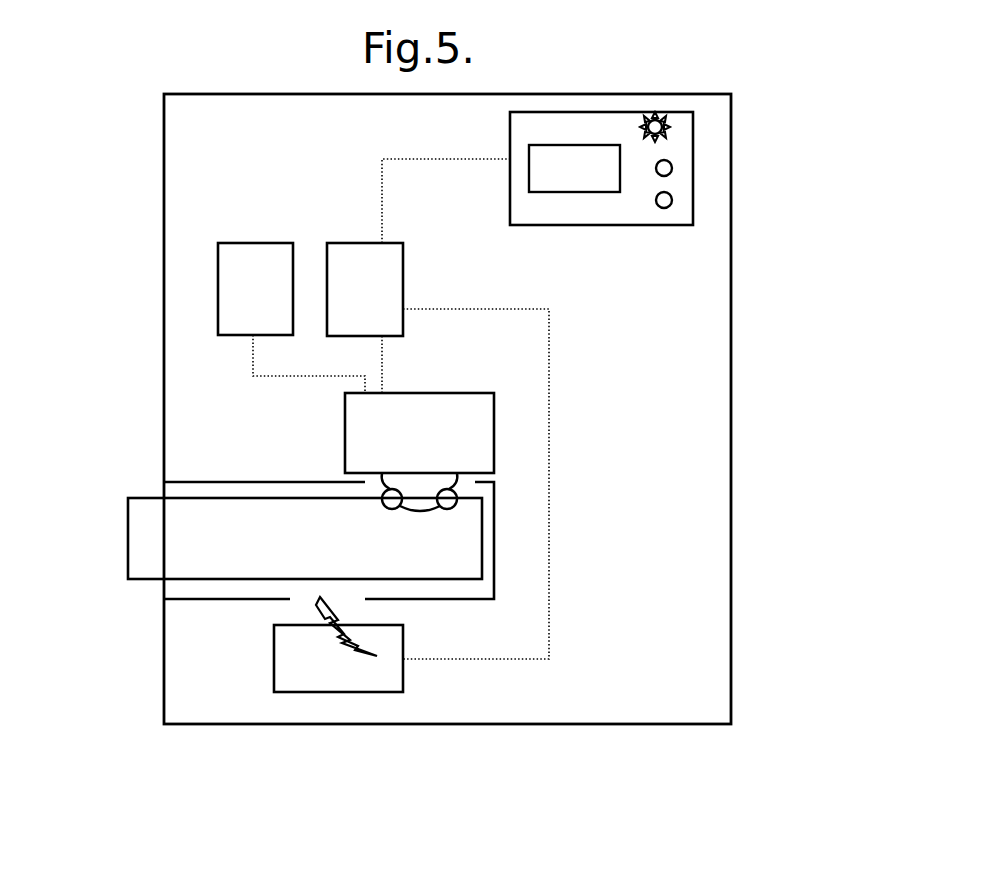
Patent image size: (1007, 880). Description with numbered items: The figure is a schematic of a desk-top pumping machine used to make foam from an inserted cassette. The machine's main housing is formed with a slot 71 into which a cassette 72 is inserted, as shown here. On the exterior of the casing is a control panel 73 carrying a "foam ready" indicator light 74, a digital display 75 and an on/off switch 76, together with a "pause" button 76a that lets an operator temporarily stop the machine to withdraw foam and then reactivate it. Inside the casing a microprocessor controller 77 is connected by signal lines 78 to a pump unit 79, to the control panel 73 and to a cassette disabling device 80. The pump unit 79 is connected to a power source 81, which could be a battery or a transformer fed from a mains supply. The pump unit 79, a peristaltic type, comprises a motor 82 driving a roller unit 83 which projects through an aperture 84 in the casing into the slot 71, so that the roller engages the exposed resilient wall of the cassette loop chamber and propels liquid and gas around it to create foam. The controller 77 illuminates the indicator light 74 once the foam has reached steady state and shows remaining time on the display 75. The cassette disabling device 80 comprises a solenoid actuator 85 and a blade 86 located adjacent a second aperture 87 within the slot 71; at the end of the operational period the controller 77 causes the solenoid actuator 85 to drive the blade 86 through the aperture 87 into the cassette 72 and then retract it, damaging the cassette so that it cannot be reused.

The slot 71 is at (187, 490).
The cassette 72 is at (128, 535).
The control panel 73 is at (693, 220).
The "foam ready" indicator light 74 is at (673, 122).
The digital display 75 is at (578, 143).
The on/off switch 76 is at (672, 168).
The "pause" button 76a is at (672, 200).
The microprocessor controller 77 is at (360, 243).
The signal lines 78 is at (382, 224).
The pump unit 79 is at (494, 405).
The cassette disabling device 80 is at (274, 662).
The timer 81 is at (258, 243).
The motor 82 is at (480, 447).
The roller unit 83 is at (425, 512).
The aperture 84 is at (475, 490).
The solenoid actuator 85 is at (370, 675).
The blade 86 is at (318, 602).
The second aperture 87 is at (362, 587).